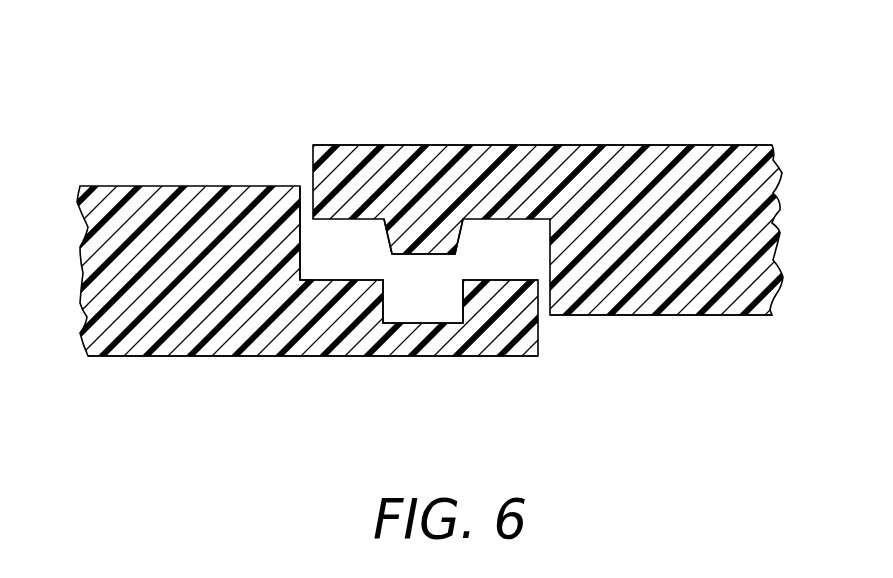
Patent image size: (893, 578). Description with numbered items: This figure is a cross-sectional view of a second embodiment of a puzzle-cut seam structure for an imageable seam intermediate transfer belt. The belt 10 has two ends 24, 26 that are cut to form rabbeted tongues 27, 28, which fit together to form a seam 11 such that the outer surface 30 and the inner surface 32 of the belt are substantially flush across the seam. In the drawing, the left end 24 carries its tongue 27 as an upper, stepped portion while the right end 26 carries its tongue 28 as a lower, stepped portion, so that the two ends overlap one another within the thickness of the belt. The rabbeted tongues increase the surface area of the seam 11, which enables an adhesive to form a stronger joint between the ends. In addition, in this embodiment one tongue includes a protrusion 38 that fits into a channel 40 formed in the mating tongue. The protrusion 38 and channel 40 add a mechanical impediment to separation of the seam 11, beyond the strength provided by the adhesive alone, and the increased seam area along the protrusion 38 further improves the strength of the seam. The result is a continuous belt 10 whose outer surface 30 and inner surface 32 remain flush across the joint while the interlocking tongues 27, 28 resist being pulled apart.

The belt 10 is at (138, 82).
The seam 11 is at (302, 178).
The first end of the belt 24 is at (363, 128).
The second end of the belt 26 is at (485, 360).
The first rabbeted tongue 27 is at (438, 145).
The second rabbeted tongue 28 is at (373, 356).
The outer surface 30 is at (723, 145).
The inner surface 32 is at (723, 315).
The protrusion 38 is at (458, 238).
The channel 40 is at (423, 322).